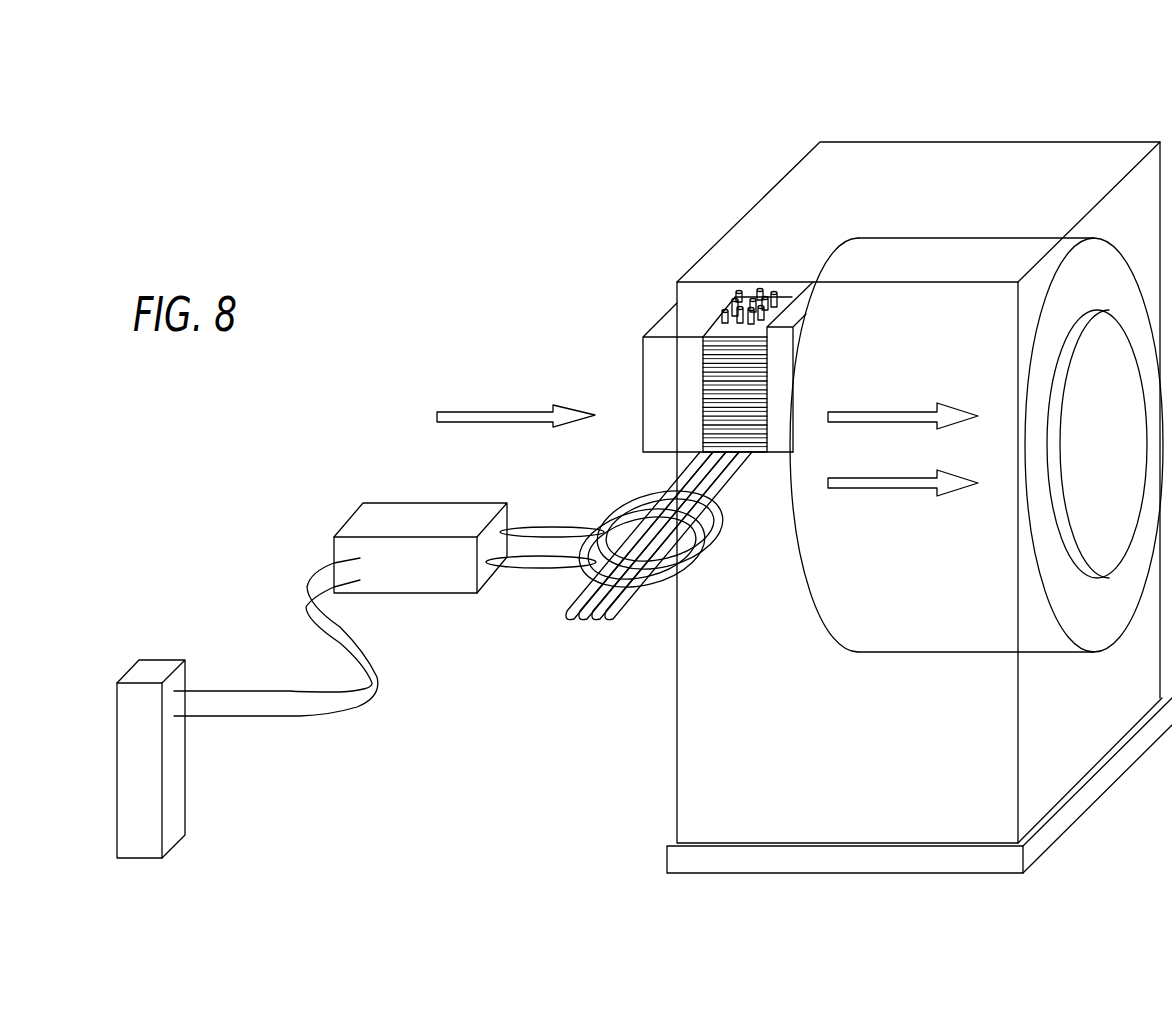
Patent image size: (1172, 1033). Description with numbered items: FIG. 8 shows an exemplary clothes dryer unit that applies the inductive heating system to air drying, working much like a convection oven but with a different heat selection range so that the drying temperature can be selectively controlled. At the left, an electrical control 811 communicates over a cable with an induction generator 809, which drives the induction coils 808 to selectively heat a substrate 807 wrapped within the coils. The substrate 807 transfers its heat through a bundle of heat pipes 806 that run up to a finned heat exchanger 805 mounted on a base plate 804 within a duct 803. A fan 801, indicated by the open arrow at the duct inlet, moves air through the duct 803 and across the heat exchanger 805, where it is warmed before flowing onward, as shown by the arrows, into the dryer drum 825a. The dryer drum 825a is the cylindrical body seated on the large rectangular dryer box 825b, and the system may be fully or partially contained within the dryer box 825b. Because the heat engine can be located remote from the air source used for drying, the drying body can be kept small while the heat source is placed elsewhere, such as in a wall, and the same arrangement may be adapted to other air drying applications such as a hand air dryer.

The fan 801 is at (655, 320).
The duct 803 is at (419, 277).
The heat sink base plate 804 is at (778, 442).
The heat exchanger 805 is at (688, 394).
The heat pipes 806 is at (760, 290).
The substrate 807 is at (640, 577).
The induction coils 808 is at (587, 560).
The induction generator 809 is at (373, 522).
The electrical control 811 is at (174, 791).
The dryer drum 825a is at (908, 630).
The dryer box 825b is at (1063, 124).